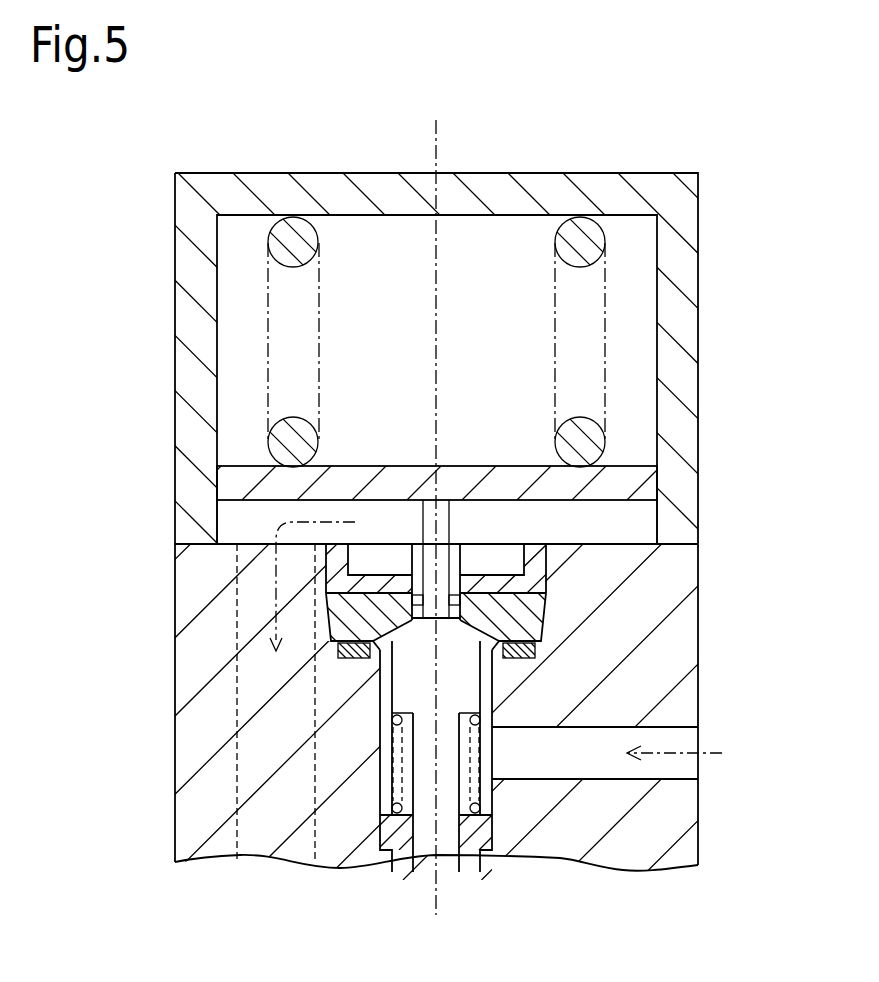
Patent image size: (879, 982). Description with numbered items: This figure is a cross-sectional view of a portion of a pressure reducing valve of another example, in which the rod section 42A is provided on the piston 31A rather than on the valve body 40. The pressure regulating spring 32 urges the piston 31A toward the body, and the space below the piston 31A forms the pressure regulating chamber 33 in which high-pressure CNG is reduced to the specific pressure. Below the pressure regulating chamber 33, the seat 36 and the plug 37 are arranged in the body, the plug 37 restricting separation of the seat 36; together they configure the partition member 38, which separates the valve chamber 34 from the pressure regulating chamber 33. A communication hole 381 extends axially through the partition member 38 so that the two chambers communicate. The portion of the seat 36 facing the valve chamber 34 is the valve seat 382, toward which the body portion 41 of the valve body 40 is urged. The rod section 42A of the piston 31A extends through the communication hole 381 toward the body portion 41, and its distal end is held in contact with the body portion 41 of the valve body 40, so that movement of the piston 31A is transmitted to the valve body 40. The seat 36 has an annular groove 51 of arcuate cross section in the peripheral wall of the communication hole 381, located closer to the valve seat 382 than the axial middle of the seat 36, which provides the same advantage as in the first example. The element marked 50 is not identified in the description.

The pressure regulating spring 32 is at (309, 236).
The rod section 42A is at (418, 561).
The piston 31A is at (507, 478).
The pressure regulating chamber 33 is at (625, 522).
The communication hole 381 is at (458, 600).
The plug 37 is at (535, 572).
The seat 36 is at (521, 613).
The partition member 38 is at (762, 553).
The seal ring 50 is at (414, 603).
The annular groove 51 is at (413, 624).
The valve body 40 is at (416, 683).
The body portion 41 is at (404, 700).
The valve chamber 34 is at (410, 765).
The valve seat 382 is at (472, 640).